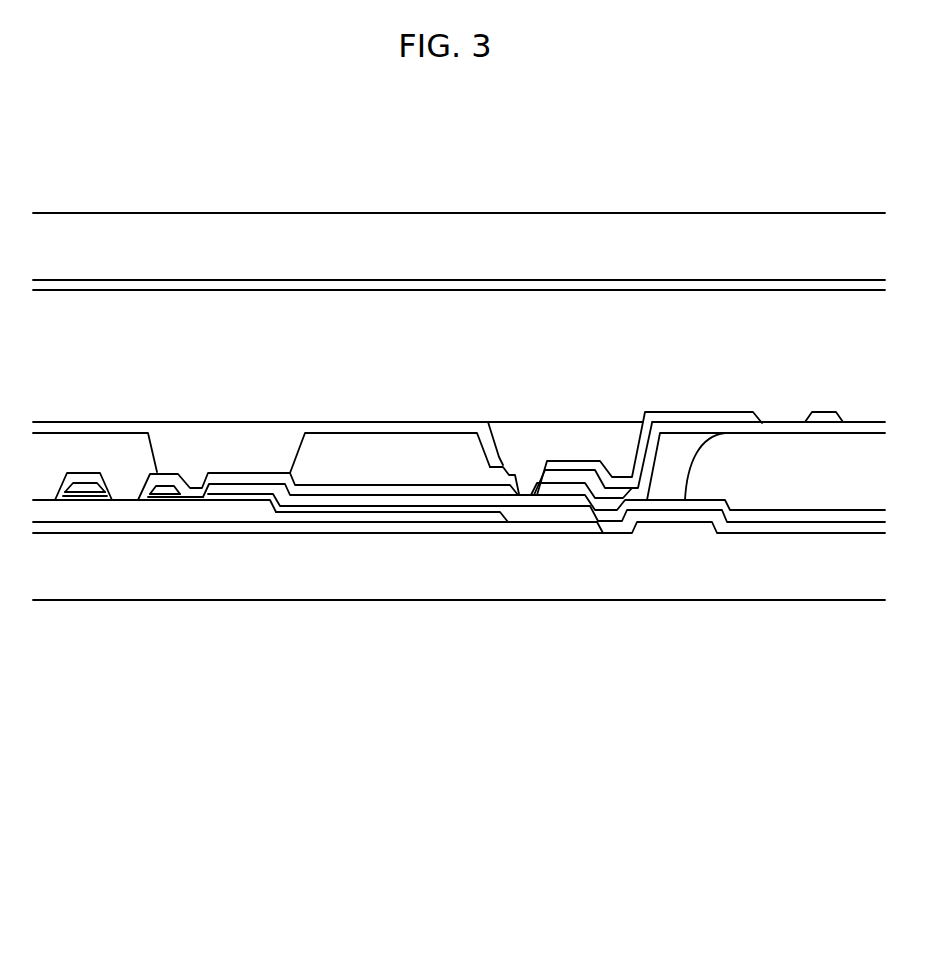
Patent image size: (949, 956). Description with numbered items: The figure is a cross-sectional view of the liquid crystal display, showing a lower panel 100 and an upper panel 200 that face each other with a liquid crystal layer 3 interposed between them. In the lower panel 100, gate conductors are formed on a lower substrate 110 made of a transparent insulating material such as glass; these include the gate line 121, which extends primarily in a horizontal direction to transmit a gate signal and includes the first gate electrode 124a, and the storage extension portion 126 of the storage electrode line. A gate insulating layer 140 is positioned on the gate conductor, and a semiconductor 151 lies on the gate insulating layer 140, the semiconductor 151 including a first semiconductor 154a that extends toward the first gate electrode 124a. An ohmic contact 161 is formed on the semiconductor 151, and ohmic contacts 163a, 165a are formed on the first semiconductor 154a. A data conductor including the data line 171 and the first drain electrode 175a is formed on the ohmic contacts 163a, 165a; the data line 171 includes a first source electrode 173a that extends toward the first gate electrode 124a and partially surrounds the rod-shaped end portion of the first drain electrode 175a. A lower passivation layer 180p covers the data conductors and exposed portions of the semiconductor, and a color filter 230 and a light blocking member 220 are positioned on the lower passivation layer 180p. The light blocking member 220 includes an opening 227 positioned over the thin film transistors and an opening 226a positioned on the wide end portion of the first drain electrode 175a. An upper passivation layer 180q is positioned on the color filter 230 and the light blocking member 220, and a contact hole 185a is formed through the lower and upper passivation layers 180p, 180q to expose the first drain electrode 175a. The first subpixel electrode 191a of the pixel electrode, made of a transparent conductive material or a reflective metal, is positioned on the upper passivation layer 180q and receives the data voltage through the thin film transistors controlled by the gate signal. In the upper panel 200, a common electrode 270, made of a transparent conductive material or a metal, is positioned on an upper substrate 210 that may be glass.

The liquid crystal layer 3 is at (887, 293).
The lower panel 100 is at (887, 423).
The lower substrate 110 is at (413, 578).
The gate line 121 is at (53, 528).
The first gate electrode 124a is at (200, 527).
The storage extension portion 126 is at (672, 528).
The gate insulating layer 140 is at (347, 527).
The semiconductor 151 is at (95, 505).
The first semiconductor 154a is at (233, 507).
The ohmic contact 161 is at (83, 498).
The ohmic contact 163a is at (155, 494).
The ohmic contact 165a is at (262, 497).
The data line 171 is at (82, 490).
The first source electrode 173a is at (168, 488).
The first drain electrode 175a is at (234, 490).
The lower passivation layer 180p is at (365, 490).
The upper passivation layer 180q is at (417, 428).
The contact hole 185a is at (523, 488).
The first subpixel electrode 191a is at (727, 413).
The upper panel 200 is at (887, 213).
The upper substrate 210 is at (348, 228).
The light blocking member 220 is at (330, 447).
The opening 226a is at (490, 456).
The opening 227 is at (155, 452).
The color filter 230 is at (790, 480).
The common electrode 270 is at (438, 285).